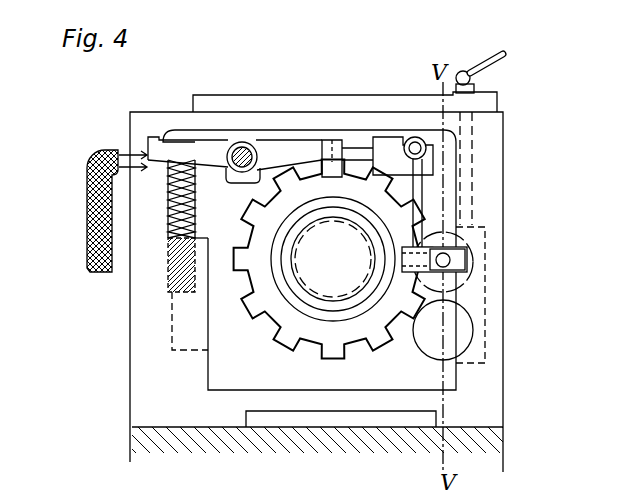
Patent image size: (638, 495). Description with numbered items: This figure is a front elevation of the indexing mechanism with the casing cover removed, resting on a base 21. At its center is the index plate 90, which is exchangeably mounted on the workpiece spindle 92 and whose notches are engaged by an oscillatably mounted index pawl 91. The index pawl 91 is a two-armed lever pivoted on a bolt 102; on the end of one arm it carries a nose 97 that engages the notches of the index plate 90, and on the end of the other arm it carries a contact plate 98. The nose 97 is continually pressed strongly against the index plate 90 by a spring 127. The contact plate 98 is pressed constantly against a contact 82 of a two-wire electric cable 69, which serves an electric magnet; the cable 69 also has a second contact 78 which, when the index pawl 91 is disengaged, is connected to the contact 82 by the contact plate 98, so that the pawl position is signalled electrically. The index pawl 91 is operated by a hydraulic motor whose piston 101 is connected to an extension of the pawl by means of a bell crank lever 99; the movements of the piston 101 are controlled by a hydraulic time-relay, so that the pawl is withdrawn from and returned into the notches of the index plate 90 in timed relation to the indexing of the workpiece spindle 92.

The base plate 21 is at (299, 431).
The two-wire electric cable 69 is at (92, 274).
The second contact 78 is at (147, 167).
The contact 82 is at (141, 145).
The index plate 90 is at (333, 259).
The index pawl 91 is at (243, 138).
The workpiece spindle 92 is at (333, 259).
The nose 97 is at (331, 138).
The contact plate 98 is at (157, 138).
The bell crank lever 99 is at (420, 212).
The piston 101 is at (452, 277).
The bolt 102 is at (253, 146).
The spring 127 is at (196, 223).